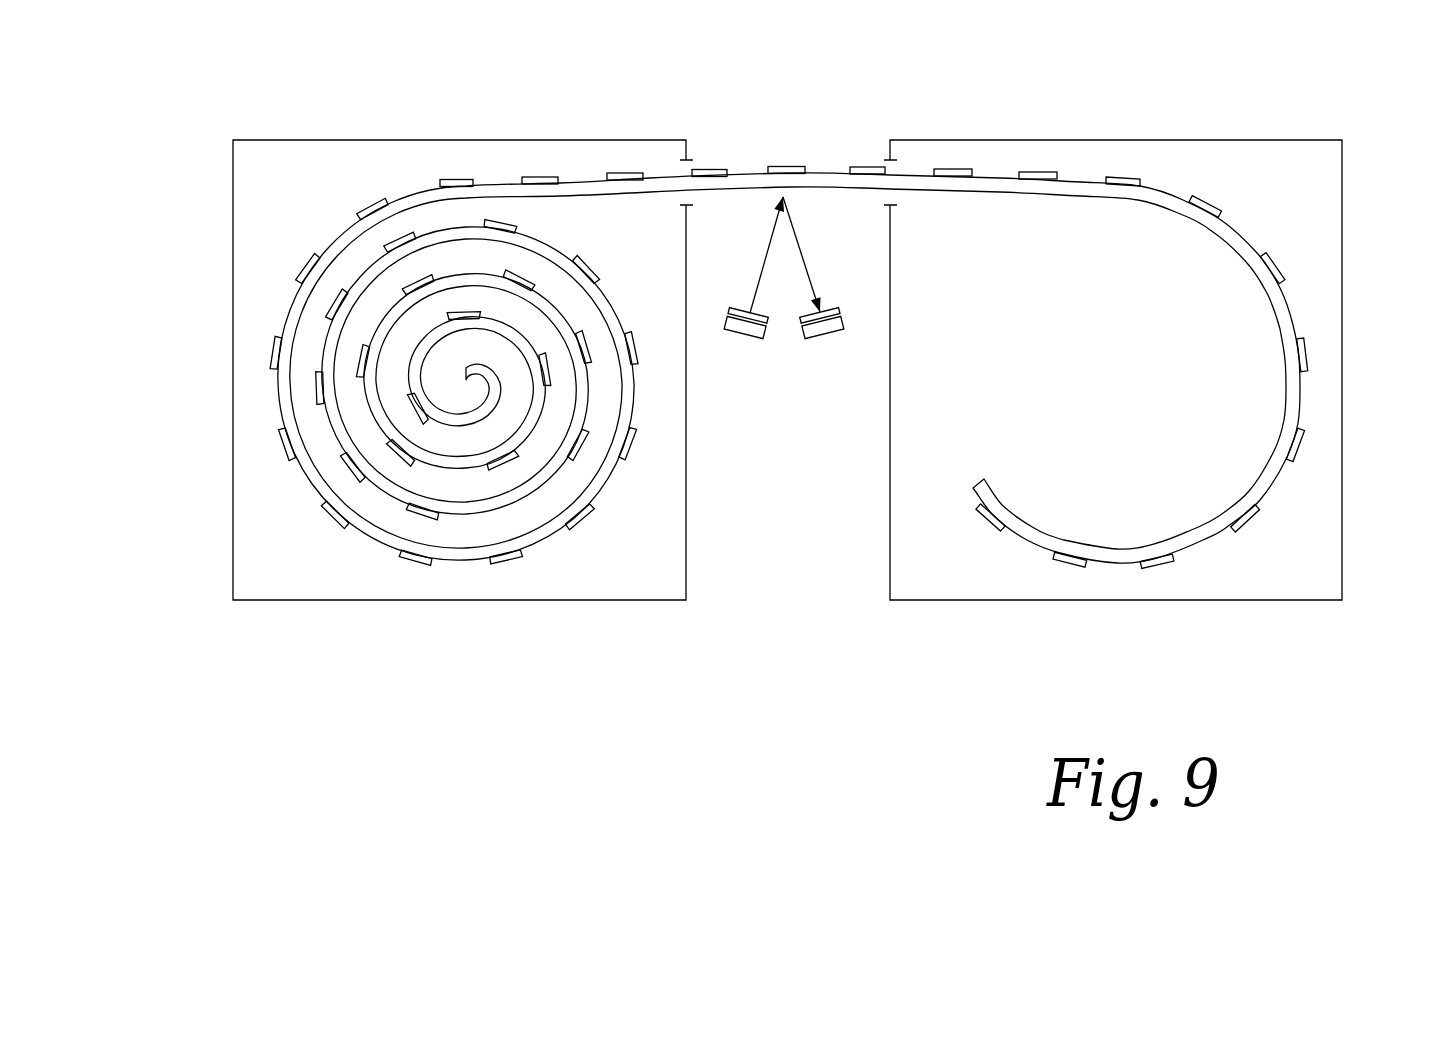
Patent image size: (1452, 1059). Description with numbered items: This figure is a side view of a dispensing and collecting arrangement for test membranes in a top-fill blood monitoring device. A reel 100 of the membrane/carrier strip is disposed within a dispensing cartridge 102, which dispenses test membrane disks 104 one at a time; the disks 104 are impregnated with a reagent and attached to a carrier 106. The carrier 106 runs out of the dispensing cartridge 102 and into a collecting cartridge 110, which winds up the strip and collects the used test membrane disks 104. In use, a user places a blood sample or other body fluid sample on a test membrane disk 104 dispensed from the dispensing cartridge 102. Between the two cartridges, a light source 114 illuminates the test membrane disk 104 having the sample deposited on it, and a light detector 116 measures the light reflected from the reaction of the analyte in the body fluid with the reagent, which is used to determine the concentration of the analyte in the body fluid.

The reel 100 is at (270, 208).
The dispensing cartridge 102 is at (270, 600).
The test membrane disks 104 is at (399, 242).
The carrier 106 is at (612, 476).
The collecting cartridge 110 is at (1330, 602).
The light source 114 is at (741, 342).
The light detector 116 is at (833, 342).